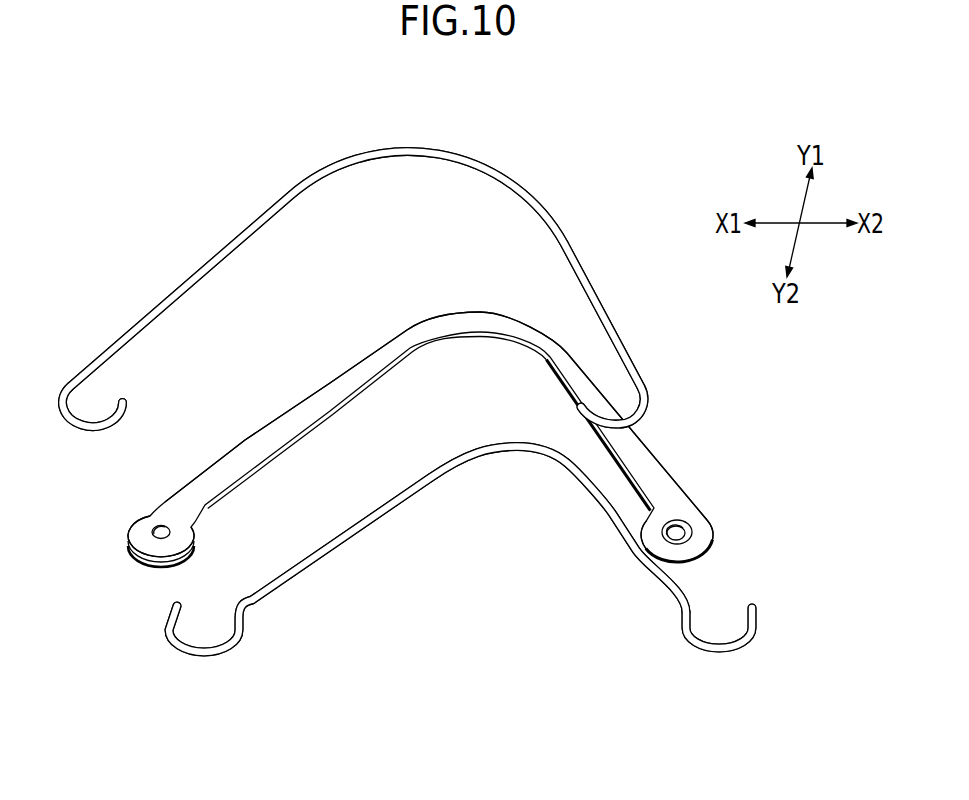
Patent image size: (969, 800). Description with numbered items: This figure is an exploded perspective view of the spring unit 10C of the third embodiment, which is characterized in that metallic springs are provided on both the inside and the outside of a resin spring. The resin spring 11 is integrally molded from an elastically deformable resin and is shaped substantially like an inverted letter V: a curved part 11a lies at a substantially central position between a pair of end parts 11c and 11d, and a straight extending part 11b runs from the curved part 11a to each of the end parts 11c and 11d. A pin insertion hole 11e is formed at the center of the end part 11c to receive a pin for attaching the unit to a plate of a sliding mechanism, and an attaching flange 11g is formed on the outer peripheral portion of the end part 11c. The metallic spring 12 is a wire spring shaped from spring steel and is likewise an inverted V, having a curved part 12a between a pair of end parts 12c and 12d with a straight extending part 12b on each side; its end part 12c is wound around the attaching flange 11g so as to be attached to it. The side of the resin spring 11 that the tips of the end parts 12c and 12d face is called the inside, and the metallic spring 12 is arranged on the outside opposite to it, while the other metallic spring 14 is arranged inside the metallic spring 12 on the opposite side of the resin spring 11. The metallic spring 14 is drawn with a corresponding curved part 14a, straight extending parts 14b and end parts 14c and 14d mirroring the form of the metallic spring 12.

The spring unit 10C is at (285, 83).
The resin spring 11 is at (424, 449).
The curved part 11a is at (484, 322).
The extending part 11b is at (292, 421).
The end part 11c is at (140, 539).
The end part 11d is at (702, 524).
The pin insertion hole 11e is at (160, 526).
The attaching flange 11g is at (137, 568).
The metallic spring 12 is at (394, 293).
The curved part 12a is at (456, 156).
The extending part 12b is at (223, 257).
The end part 12c is at (70, 425).
The end part 12d is at (634, 415).
The metallic spring 14 is at (476, 587).
The top portion of second wire 14a is at (518, 449).
The leg portions of second wire 14b is at (333, 547).
The left hook of second wire 14c is at (185, 657).
The right hook of second wire 14d is at (737, 650).